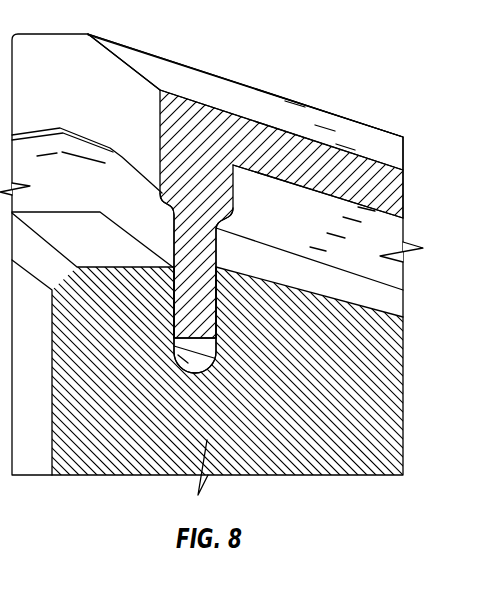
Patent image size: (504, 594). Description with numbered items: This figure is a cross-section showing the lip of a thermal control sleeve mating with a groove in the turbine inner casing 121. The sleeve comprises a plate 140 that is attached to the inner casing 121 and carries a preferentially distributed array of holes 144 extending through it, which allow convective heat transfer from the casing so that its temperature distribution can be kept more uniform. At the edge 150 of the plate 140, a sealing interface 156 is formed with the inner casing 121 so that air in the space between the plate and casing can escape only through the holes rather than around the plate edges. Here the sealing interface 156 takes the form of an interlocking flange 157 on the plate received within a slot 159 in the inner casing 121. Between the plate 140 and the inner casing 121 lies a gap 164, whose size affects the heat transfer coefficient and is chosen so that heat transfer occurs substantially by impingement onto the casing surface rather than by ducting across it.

The turbine inner casing 121 is at (213, 443).
The plate 140 is at (290, 140).
The holes 144 is at (330, 114).
The edges of plates 150 is at (200, 127).
The sealing interface 156 is at (147, 286).
The interlocking flange 157 is at (216, 297).
The slot 159 is at (213, 367).
The gap 164 is at (276, 272).